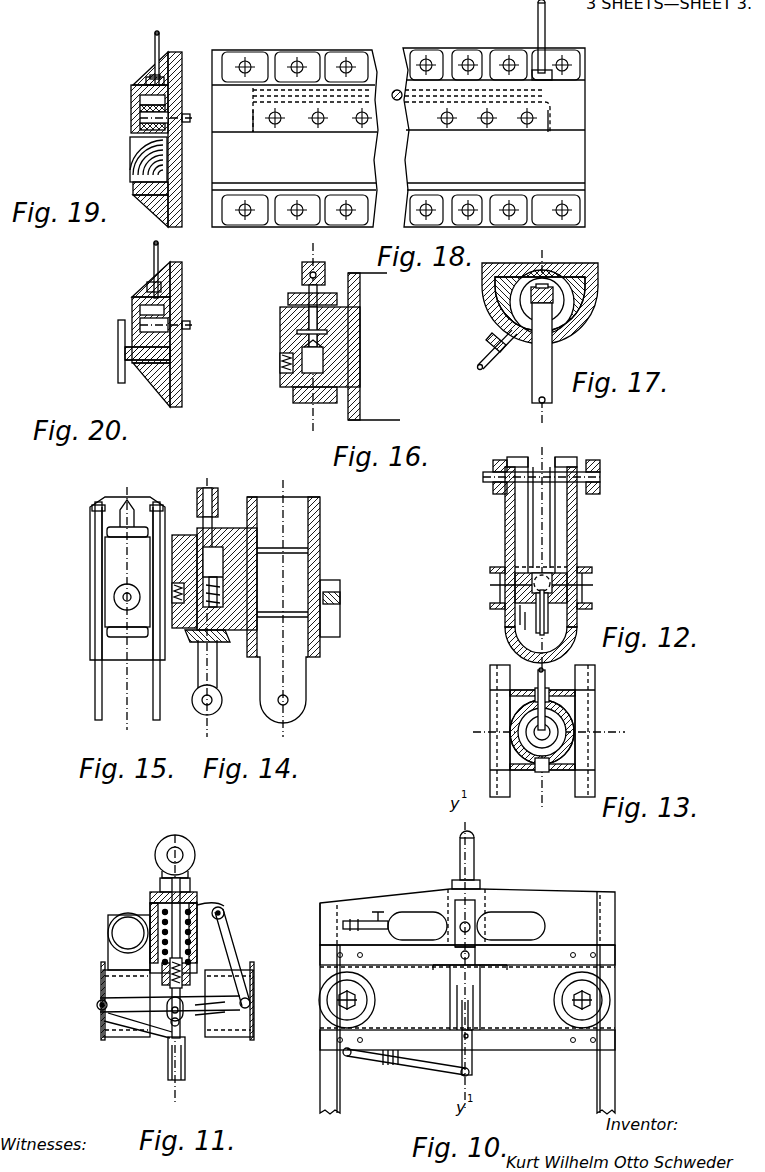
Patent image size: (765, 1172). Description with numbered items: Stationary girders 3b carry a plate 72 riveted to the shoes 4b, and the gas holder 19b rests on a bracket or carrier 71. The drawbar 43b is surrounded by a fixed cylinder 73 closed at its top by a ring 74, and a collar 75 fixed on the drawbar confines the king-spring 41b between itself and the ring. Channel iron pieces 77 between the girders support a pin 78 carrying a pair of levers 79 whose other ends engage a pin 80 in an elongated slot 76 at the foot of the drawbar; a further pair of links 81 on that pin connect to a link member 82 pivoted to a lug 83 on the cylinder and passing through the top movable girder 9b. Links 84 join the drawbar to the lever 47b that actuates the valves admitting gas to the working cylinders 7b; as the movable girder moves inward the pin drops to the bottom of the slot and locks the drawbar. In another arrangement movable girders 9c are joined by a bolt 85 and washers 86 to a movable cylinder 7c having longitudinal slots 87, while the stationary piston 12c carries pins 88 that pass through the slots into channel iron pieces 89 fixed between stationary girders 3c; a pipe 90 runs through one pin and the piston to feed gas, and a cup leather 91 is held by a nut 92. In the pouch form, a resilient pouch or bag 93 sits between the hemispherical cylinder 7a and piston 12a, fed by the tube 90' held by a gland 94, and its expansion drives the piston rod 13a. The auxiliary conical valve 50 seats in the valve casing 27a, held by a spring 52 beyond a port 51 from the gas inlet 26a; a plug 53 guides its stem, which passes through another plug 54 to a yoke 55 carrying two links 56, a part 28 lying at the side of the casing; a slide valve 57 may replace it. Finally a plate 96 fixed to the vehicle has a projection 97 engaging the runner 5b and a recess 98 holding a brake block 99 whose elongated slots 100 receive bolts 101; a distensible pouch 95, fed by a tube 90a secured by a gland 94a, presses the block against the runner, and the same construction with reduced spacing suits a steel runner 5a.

In FIG. 19, the plate 96 is at (182, 162).
In FIG. 19, the recess 98 is at (170, 108).
In FIG. 18, the recess 98 is at (253, 120).
In FIG. 20, the recess 98 is at (140, 310).
In FIG. 19, the distensible pouch 95 is at (140, 100).
In FIG. 18, the distensible pouch 95 is at (253, 96).
In FIG. 19, the elongated slots 100 is at (140, 109).
In FIG. 18, the elongated slots 100 is at (276, 112).
In FIG. 19, the brake member 99 is at (140, 127).
In FIG. 19, the bolts 101 is at (140, 119).
In FIG. 18, the bolts 101 is at (362, 124).
In FIG. 19, the tube 90a is at (155, 45).
In FIG. 18, the tube 90a is at (545, 28).
In FIG. 19, the gland 94a is at (146, 82).
In FIG. 18, the gland 94a is at (552, 75).
In FIG. 19, the runner 5b is at (130, 156).
In FIG. 19, the projection 97 is at (133, 190).
In FIG. 18, the projection 97 is at (331, 190).
In FIG. 20, the projection 97 is at (152, 380).
In FIG. 16, the slide valve 57 is at (305, 333).
In FIG. 20, the steel runner 5a is at (118, 354).
In FIG. 17, the cylinder 7a is at (598, 296).
In FIG. 17, the piston 12a is at (563, 278).
In FIG. 17, the distensible resilient pouch 93 is at (564, 306).
In FIG. 17, the piston rod 13a is at (552, 357).
In FIG. 17, the gland 94 is at (488, 337).
In FIG. 17, the tube 90' is at (484, 361).
In FIG. 12, the bolt 85 is at (600, 476).
In FIG. 12, the washers 86 is at (493, 466).
In FIG. 12, the movable girders 9c is at (597, 443).
In FIG. 12, the movable cylinder 7c is at (577, 516).
In FIG. 13, the movable cylinder 7c is at (571, 714).
In FIG. 12, the longitudinal slots 87 is at (548, 531).
In FIG. 13, the longitudinal slots 87 is at (580, 697).
In FIG. 12, the stationary girders 3c is at (582, 568).
In FIG. 13, the stationary girders 3c is at (613, 745).
In FIG. 12, the projections or pins 88 is at (555, 581).
In FIG. 13, the projections or pins 88 is at (510, 694).
In FIG. 12, the piston 12c is at (577, 596).
In FIG. 13, the piston 12c is at (568, 728).
In FIG. 12, the pipe 90 is at (573, 612).
In FIG. 13, the pipe 90 is at (529, 696).
In FIG. 12, the cup leather 91 is at (520, 612).
In FIG. 12, the nut 92 is at (522, 624).
In FIG. 13, the channel iron pieces 89 is at (550, 690).
In FIG. 15, the yoke 55 is at (135, 497).
In FIG. 14, the yoke 55 is at (218, 498).
In FIG. 15, the links 56 is at (160, 505).
In FIG. 15, the valve casing 27a is at (105, 617).
In FIG. 14, the valve casing 27a is at (320, 541).
In FIG. 15, the gas inlet 26a is at (128, 592).
In FIG. 14, the gas inlet 26a is at (186, 640).
In FIG. 14, the plug 54 is at (200, 535).
In FIG. 14, the auxiliary conical valve 50 is at (226, 535).
In FIG. 14, the spring 52 is at (217, 591).
In FIG. 14, the port 51 is at (252, 540).
In FIG. 14, the boss 28 is at (340, 616).
In FIG. 14, the plug 53 is at (218, 645).
In FIG. 11, the drawbar 43b is at (190, 890).
In FIG. 10, the drawbar 43b is at (474, 878).
In FIG. 11, the ring 74 is at (160, 893).
In FIG. 11, the plate 72 is at (158, 897).
In FIG. 10, the plate 72 is at (434, 896).
In FIG. 11, the fixed cylinder 73 is at (150, 900).
In FIG. 11, the king-spring 41b is at (192, 935).
In FIG. 11, the collar 75 is at (162, 976).
In FIG. 11, the bracket or carrier 71 is at (108, 933).
In FIG. 10, the bracket or carrier 71 is at (476, 915).
In FIG. 11, the gas holder 19b is at (125, 915).
In FIG. 10, the gas holder 19b is at (444, 926).
In FIG. 11, the stationary girders 3b is at (140, 1036).
In FIG. 10, the stationary girders 3b is at (467, 993).
In FIG. 11, the movable girder 9b is at (254, 972).
In FIG. 11, the link member 82 is at (240, 952).
In FIG. 11, the lug or bracket 83 is at (224, 912).
In FIG. 11, the channel iron pieces 77 is at (103, 990).
In FIG. 10, the channel iron pieces 77 is at (450, 982).
In FIG. 11, the pin 78 is at (97, 1007).
In FIG. 11, the levers 79 is at (110, 1026).
In FIG. 10, the levers 79 is at (457, 1004).
In FIG. 11, the elongated slot 76 is at (180, 1012).
In FIG. 11, the pin 80 is at (172, 1040).
In FIG. 11, the levers or links 81 is at (197, 1035).
In FIG. 10, the levers or links 81 is at (462, 1021).
In FIG. 11, the links 84 is at (183, 1070).
In FIG. 10, the links 84 is at (472, 1060).
In FIG. 10, the shoes 4b is at (615, 912).
In FIG. 10, the working cylinders 7b is at (632, 997).
In FIG. 10, the lever 47b is at (415, 1063).